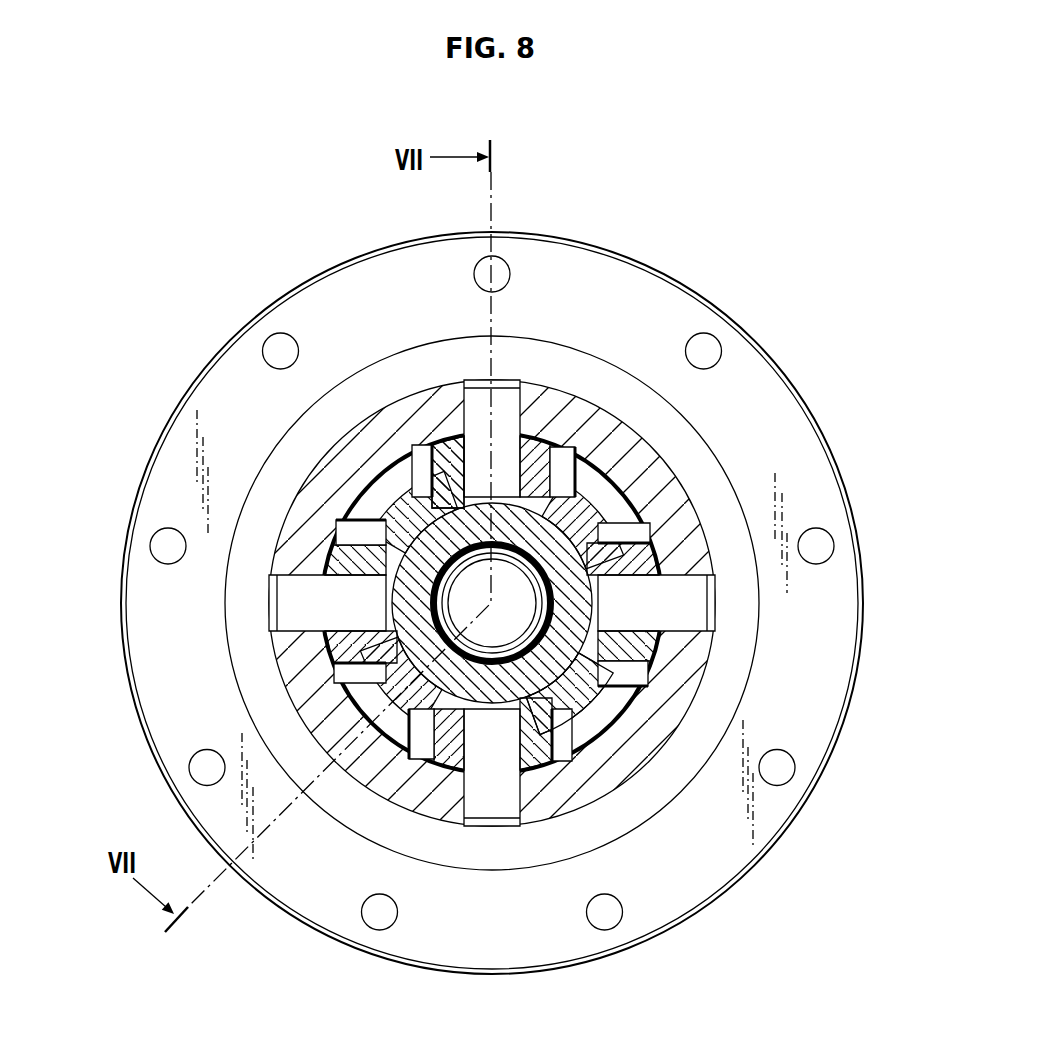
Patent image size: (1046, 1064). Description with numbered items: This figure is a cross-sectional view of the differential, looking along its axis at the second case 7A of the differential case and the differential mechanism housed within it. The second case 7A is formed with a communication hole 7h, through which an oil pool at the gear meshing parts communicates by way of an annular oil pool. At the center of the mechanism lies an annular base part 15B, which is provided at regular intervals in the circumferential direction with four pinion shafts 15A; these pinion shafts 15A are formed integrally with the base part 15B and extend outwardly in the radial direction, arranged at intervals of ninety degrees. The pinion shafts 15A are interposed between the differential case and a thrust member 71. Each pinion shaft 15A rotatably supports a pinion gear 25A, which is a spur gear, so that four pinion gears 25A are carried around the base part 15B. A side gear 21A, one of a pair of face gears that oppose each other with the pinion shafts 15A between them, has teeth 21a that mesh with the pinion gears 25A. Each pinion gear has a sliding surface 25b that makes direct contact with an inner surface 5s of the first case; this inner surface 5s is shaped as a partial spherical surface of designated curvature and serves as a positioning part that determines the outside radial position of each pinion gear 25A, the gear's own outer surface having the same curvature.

The second case 7A is at (591, 228).
The communication hole 7h is at (497, 265).
The thrust member 71 is at (302, 848).
The side gear 21A is at (599, 576).
The teeth 21a is at (603, 517).
The pinion shaft 15A is at (514, 486).
The annular base part 15B is at (600, 690).
The pinion gear 25A is at (537, 452).
The sliding surface 25b is at (447, 447).
The inner surface 5s is at (538, 455).